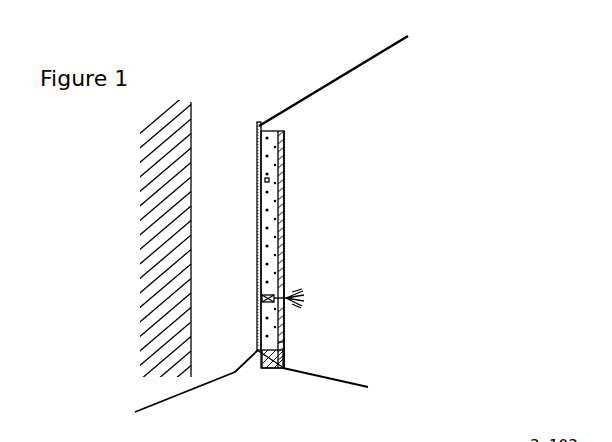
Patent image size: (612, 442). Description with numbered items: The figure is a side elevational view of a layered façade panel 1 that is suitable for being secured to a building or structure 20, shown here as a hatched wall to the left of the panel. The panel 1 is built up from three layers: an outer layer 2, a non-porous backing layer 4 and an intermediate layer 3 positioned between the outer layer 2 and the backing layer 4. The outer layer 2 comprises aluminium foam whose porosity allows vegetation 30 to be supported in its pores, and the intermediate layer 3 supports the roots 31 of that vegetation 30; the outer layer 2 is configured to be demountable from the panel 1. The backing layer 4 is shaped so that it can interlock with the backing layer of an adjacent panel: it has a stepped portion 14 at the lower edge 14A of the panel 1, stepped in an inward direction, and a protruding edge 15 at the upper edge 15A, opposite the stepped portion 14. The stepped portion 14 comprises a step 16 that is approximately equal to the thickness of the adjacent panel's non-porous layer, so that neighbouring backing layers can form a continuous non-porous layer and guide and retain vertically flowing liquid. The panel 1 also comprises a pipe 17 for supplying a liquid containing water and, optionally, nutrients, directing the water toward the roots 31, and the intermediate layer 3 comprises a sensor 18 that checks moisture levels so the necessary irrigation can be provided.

The layered façade panel 1 is at (423, 139).
The outer layer 2 is at (284, 214).
The intermediate layer 3 is at (272, 161).
The non-porous backing layer 4 is at (283, 358).
The stepped portion 14 is at (260, 360).
The lower edge 14A is at (372, 388).
The protruding edge 15 is at (258, 122).
The upper edge 15A is at (380, 76).
The step 16 is at (163, 386).
The pipe 17 is at (283, 342).
The sensor 18 is at (283, 172).
The building or structure 20 is at (157, 370).
The vegetation 30 is at (304, 297).
The roots 31 is at (283, 290).